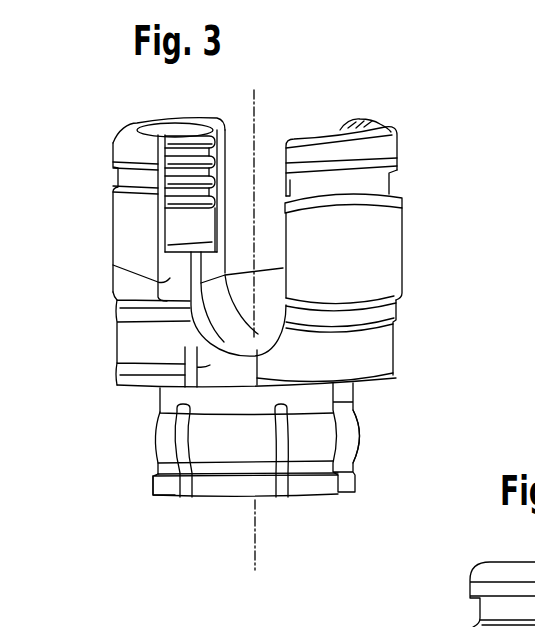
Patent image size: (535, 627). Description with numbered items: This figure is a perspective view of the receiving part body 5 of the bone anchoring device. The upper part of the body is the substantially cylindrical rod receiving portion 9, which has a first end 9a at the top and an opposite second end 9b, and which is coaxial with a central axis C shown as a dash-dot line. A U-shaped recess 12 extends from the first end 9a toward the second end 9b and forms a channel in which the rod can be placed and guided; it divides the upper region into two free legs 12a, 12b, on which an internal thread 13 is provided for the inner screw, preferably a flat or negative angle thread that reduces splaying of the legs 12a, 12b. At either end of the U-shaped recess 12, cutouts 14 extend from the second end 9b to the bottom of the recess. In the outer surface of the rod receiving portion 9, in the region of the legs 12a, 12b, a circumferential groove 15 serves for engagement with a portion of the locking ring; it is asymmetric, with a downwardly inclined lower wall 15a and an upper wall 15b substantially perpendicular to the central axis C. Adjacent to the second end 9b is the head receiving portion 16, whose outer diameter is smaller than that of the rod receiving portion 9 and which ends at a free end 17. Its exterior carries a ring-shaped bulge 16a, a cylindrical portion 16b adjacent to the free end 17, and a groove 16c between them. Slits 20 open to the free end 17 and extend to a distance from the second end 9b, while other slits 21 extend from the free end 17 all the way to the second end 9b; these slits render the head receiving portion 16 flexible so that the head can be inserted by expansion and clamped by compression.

The central axis C is at (253, 108).
The receiving part body 5 is at (406, 223).
The rod receiving portion 9 is at (110, 223).
The first end 9a is at (370, 123).
The second end 9b is at (367, 382).
The U-shaped recess 12 is at (113, 265).
The free leg 12a is at (118, 145).
The free leg 12b is at (397, 147).
The internal thread 13 is at (188, 150).
The cutout 14 is at (120, 366).
The groove 15 is at (399, 308).
The lower wall 15a is at (115, 310).
The upper wall 15b is at (112, 304).
The head receiving portion 16 is at (148, 420).
The ring-shaped bulge 16a is at (161, 431).
The cylindrical portion 16b is at (357, 487).
The groove 16c is at (357, 460).
The free end 17 is at (170, 498).
The slit 20 is at (181, 498).
The slit 21 is at (357, 405).